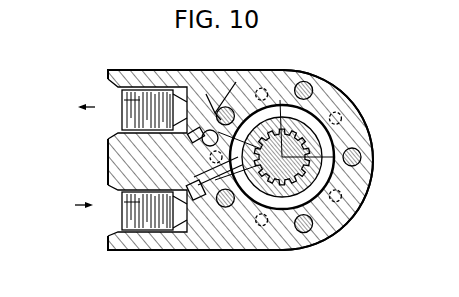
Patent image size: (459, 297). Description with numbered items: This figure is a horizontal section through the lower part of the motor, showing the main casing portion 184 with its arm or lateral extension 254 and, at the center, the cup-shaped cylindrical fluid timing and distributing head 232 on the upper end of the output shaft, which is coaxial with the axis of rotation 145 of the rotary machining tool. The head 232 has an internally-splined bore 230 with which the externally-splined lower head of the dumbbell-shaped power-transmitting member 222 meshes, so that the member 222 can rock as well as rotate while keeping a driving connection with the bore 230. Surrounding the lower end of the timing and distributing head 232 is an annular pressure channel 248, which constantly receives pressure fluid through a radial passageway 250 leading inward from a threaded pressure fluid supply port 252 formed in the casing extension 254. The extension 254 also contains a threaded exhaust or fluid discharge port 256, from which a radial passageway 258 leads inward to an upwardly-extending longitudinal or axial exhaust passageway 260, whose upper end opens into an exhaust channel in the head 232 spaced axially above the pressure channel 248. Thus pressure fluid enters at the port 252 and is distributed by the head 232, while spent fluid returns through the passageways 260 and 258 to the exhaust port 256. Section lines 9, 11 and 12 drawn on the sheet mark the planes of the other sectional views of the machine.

The main casing portion 184 is at (303, 72).
The power-transmitting member 222 is at (349, 221).
The arm or lateral extension 254 is at (156, 251).
The threaded exhaust or fluid discharge port 256 is at (114, 92).
The threaded pressure fluid supply port 252 is at (128, 224).
The radial passageway 258 is at (192, 129).
The longitudinal or axial exhaust passageway 260 is at (226, 108).
The radial passageway 250 is at (200, 206).
The axis of rotation 145 is at (280, 100).
The fluid timing and distributing head 232 is at (322, 137).
The internally-splined bore 230 is at (329, 117).
The annular pressure channel 248 is at (296, 220).
The section line 9 is at (108, 162).
The section line 11 is at (108, 138).
The section line 12 is at (334, 157).